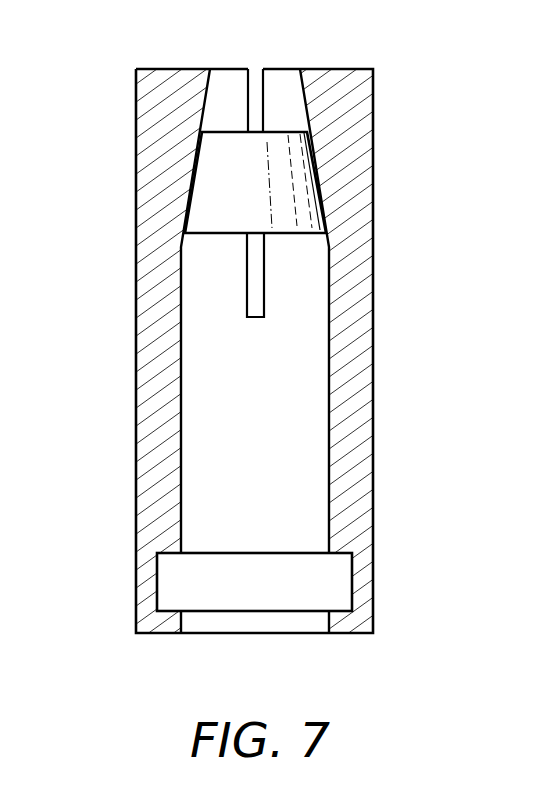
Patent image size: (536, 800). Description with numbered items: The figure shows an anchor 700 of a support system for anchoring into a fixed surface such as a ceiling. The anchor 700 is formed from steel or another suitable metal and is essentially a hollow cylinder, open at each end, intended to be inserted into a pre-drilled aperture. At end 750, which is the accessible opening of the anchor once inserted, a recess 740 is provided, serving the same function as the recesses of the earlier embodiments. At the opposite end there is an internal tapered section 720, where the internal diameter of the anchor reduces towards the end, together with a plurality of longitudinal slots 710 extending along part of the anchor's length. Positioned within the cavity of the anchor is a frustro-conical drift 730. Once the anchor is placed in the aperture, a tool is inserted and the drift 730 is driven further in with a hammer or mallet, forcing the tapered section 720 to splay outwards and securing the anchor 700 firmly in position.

The anchor 700 is at (117, 113).
The longitudinal slots 710 is at (252, 69).
The tapered section 720 is at (310, 113).
The drift 730 is at (373, 295).
The recess 740 is at (352, 572).
The end 750 is at (257, 627).